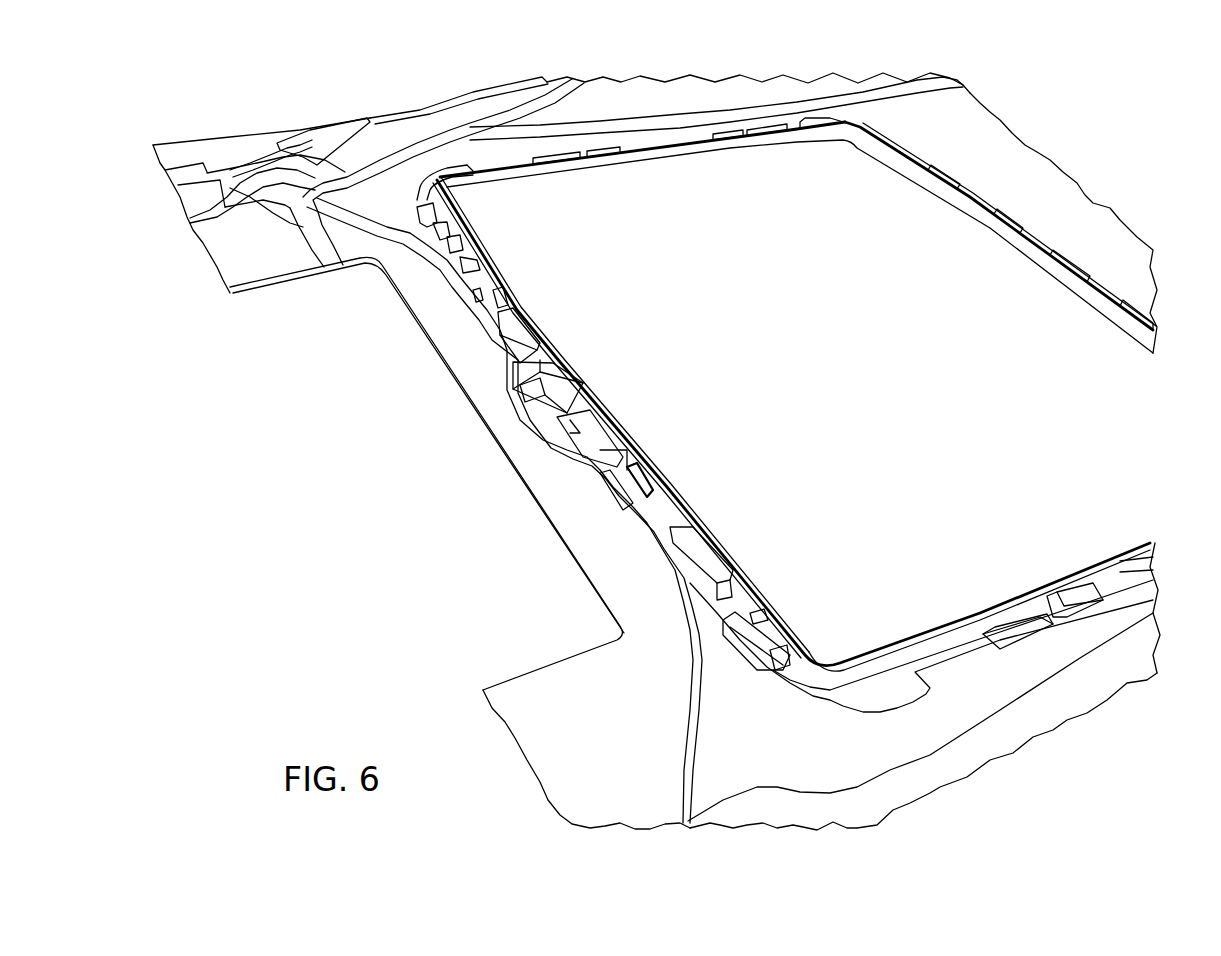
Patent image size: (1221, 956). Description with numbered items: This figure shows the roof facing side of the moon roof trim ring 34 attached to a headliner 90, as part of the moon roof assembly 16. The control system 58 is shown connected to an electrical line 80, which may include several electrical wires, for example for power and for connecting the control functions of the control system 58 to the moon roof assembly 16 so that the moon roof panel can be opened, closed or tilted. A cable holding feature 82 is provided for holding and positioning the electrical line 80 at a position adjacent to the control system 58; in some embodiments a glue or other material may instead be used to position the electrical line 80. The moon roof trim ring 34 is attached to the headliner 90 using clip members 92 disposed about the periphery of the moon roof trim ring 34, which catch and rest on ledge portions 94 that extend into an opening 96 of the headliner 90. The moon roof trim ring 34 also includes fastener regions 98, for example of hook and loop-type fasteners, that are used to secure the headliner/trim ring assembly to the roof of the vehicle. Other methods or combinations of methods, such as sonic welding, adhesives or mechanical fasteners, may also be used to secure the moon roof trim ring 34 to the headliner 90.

The moon roof assembly 16 is at (728, 318).
The moon roof trim ring 34 is at (790, 602).
The control system 58 is at (583, 361).
The electrical line 80 is at (686, 721).
The cable holding feature 82 is at (487, 403).
The headliner 90 is at (554, 681).
The clip members 92 is at (764, 647).
The ledge portions 94 is at (717, 622).
The opening 96 is at (959, 606).
The fastener regions 98 is at (541, 310).